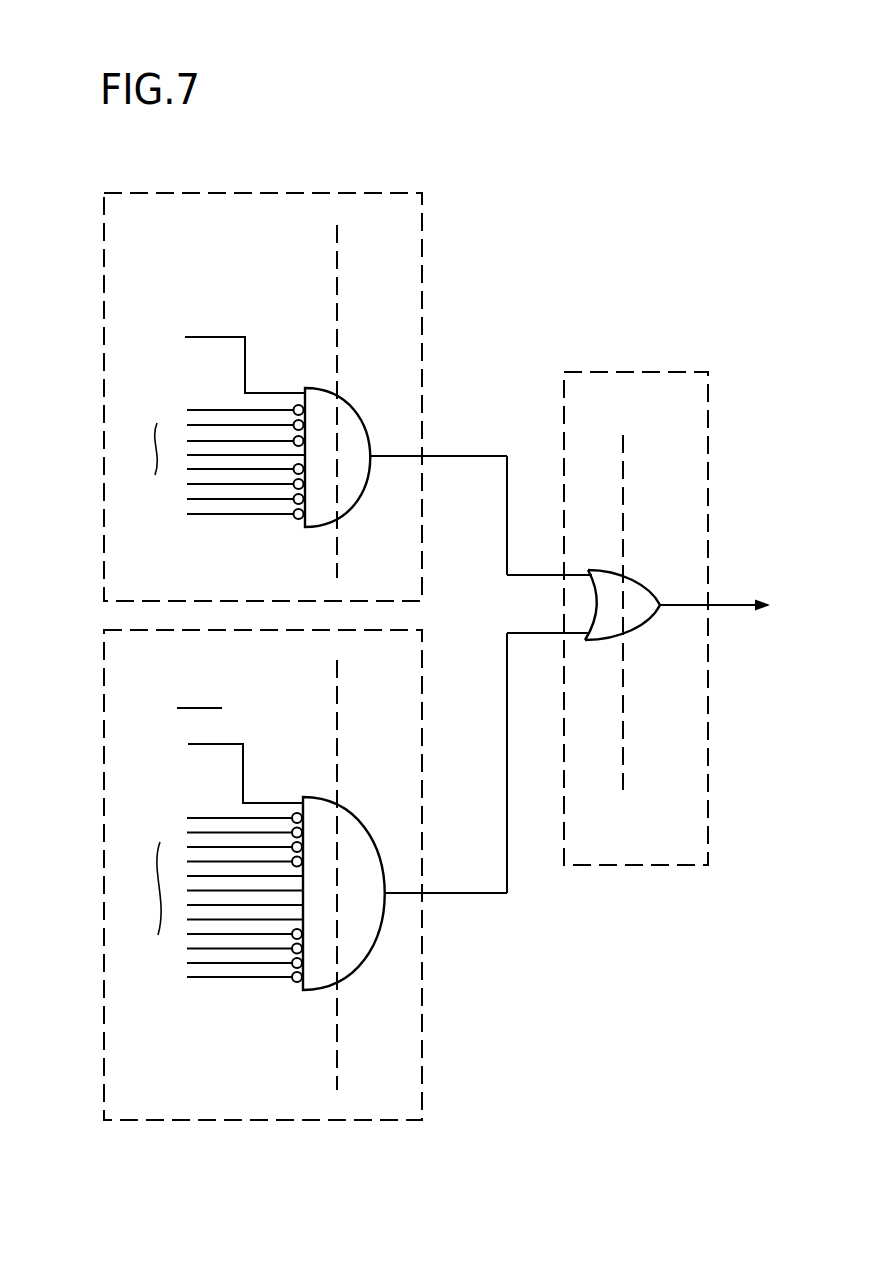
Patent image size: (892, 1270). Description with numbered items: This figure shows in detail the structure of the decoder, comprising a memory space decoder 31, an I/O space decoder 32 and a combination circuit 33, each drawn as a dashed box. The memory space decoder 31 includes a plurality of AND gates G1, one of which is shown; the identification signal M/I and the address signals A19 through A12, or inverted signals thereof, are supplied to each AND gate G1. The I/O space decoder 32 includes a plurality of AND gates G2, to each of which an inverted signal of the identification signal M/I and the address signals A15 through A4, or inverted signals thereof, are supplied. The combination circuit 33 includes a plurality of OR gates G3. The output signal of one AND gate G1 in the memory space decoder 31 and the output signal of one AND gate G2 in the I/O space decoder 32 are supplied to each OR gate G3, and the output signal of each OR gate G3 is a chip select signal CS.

The memory space decoder 31 is at (422, 270).
The I/O space decoder 32 is at (422, 1073).
The combination circuit 33 is at (612, 868).
The AND gate G1 is at (350, 418).
The AND gate G2 is at (354, 836).
The OR gate G3 is at (637, 590).